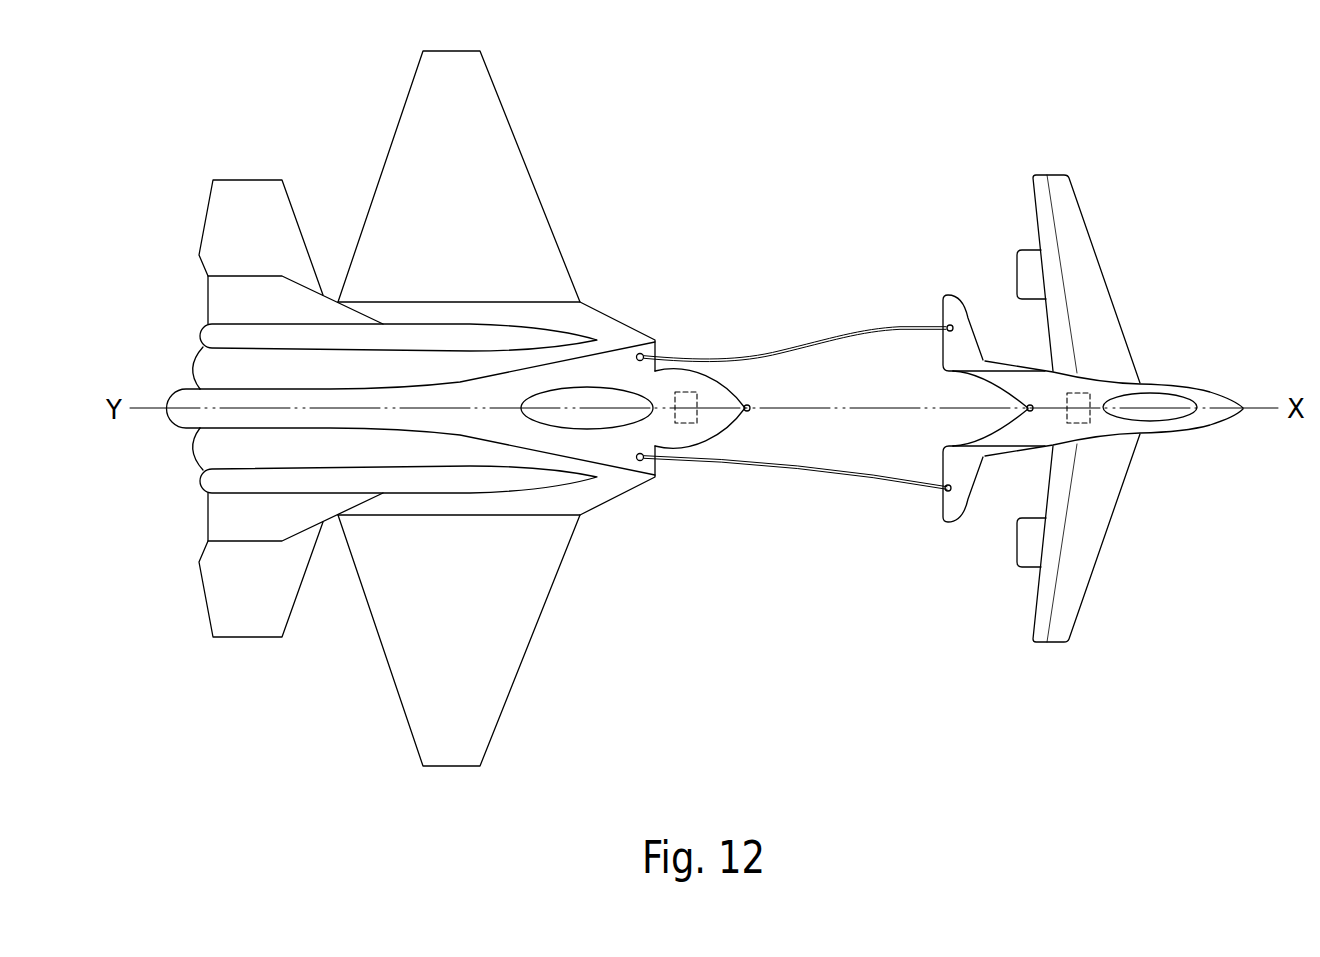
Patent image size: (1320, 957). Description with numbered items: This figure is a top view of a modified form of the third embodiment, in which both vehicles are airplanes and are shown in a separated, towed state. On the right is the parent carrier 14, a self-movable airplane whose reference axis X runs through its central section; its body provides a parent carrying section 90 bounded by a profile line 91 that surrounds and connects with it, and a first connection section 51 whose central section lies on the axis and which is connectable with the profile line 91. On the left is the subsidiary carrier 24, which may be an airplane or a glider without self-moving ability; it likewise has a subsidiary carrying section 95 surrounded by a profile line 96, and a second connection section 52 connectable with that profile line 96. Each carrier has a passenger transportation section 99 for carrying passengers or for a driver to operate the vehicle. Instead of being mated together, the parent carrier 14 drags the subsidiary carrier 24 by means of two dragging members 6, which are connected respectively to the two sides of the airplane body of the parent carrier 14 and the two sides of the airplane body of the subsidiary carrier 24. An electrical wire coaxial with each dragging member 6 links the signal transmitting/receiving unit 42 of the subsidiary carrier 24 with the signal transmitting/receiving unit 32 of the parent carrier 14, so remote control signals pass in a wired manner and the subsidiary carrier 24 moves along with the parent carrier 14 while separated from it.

The dragging member 6 is at (873, 332).
The parent carrier 14 is at (1232, 385).
The subsidiary carrier 24 is at (391, 127).
The signal transmitting/receiving unit 32 is at (1068, 393).
The signal transmitting/receiving unit 42 is at (679, 391).
The first connection section 51 is at (1003, 456).
The second connection section 52 is at (699, 440).
The parent carrying section 90 is at (1106, 442).
The profile line 91 is at (940, 510).
The subsidiary carrying section 95 is at (504, 519).
The profile line 96 is at (656, 460).
The passenger transportation section 99 is at (621, 439).